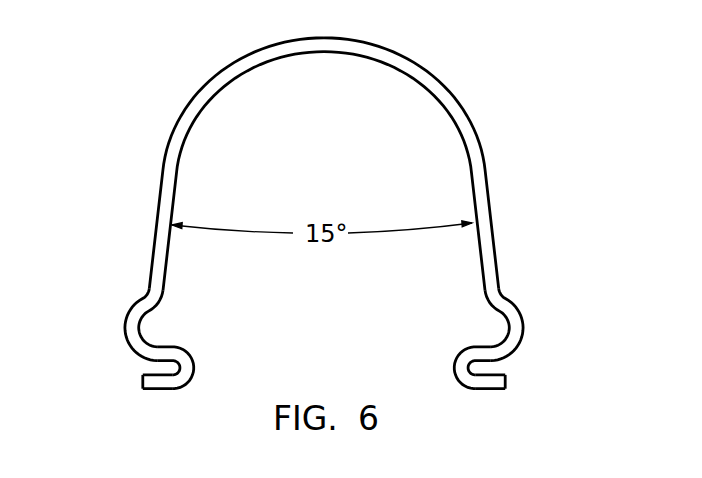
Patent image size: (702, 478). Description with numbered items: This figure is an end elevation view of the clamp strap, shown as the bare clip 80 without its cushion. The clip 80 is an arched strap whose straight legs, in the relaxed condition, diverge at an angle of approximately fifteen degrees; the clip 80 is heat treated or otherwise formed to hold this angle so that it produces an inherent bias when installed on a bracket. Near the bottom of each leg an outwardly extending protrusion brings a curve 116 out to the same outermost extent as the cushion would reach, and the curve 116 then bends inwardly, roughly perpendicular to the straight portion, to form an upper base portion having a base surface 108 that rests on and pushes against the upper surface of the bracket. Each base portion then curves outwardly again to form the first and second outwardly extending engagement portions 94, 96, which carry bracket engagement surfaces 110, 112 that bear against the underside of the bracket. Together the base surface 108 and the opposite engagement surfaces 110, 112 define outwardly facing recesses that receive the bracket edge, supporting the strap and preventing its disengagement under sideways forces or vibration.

The clip 80 is at (488, 167).
The curve 116 is at (135, 310).
The base surface 108 is at (147, 360).
The bracket engagement surface 112 is at (157, 375).
The bracket engagement surface 110 is at (486, 373).
The second outwardly extending engagement portion 96 is at (140, 382).
The first outwardly extending engagement portion 94 is at (508, 380).